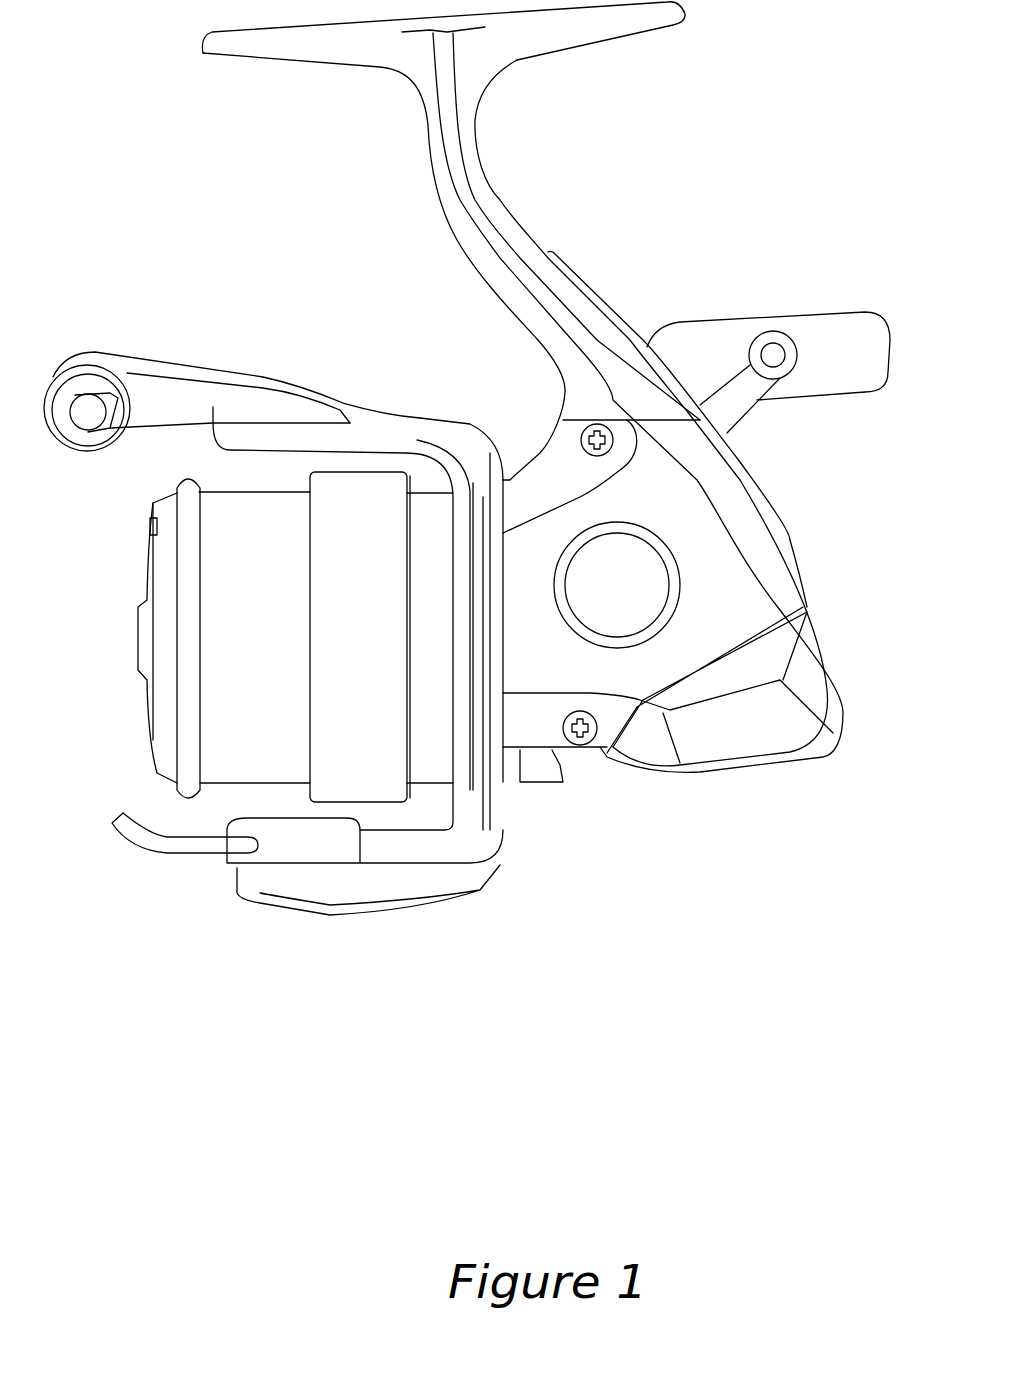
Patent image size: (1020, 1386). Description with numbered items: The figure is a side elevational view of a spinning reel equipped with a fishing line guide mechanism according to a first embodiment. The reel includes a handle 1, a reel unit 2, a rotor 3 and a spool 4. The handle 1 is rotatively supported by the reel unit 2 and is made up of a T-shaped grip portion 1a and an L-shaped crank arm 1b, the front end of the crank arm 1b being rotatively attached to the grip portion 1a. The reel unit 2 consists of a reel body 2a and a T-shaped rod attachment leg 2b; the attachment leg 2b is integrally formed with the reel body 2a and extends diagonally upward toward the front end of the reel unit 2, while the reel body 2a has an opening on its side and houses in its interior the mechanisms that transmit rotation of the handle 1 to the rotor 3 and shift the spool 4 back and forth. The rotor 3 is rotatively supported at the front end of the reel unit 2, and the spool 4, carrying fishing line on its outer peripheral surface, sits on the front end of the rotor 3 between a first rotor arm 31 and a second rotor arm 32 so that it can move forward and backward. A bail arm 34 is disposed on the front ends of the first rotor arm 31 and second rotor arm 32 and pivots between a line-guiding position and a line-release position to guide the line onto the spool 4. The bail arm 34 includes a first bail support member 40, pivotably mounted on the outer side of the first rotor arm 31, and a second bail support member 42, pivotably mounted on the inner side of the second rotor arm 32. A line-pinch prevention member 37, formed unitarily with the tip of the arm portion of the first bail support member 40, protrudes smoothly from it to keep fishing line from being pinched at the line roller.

The handle 1 is at (773, 312).
The T-shaped grip portion 1a is at (863, 373).
The L-shaped crank arm 1b is at (747, 373).
The reel unit 2 is at (620, 305).
The reel body 2a is at (750, 520).
The T-shaped rod attachment leg 2b is at (520, 220).
The rotor 3 is at (530, 866).
The spool 4 is at (215, 740).
The first rotor arm 31 is at (327, 437).
The second rotor arm 32 is at (410, 840).
The bail arm 34 is at (63, 333).
The line-pinch prevention member 37 is at (80, 360).
The first bail support member 40 is at (187, 373).
The second bail support member 42 is at (307, 847).